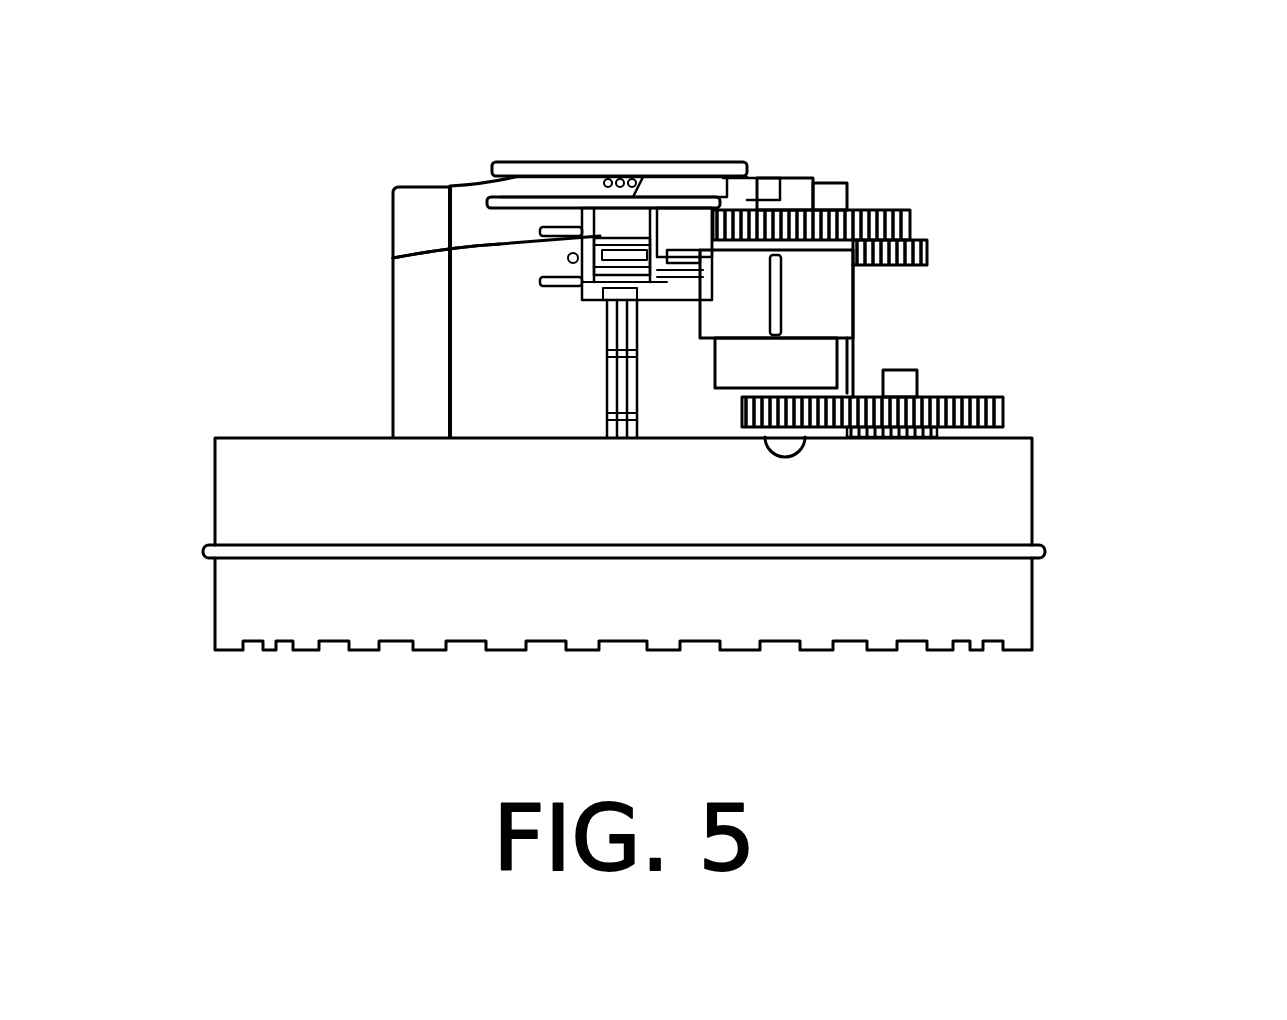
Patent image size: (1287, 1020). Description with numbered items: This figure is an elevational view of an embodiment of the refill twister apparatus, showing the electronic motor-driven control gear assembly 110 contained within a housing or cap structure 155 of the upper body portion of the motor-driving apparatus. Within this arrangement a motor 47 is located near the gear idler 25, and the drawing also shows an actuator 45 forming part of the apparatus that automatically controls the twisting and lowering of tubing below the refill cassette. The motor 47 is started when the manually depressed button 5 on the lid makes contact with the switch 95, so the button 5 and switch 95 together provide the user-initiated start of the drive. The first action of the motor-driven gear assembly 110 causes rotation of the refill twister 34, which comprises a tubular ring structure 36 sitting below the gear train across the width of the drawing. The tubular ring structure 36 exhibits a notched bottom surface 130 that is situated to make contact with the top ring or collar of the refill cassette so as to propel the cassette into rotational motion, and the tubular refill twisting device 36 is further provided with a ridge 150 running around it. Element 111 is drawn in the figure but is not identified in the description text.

The manually depressed button 5 is at (633, 197).
The gear idler 25 is at (870, 208).
The refill twister 34 is at (1017, 587).
The tubular ring structure 36 is at (1003, 518).
The actuator 45 is at (580, 207).
The motor 47 is at (750, 210).
The switch 95 is at (393, 258).
The gear assembly 110 is at (918, 203).
The lower gear 111 is at (790, 448).
The notched bottom surface 130 is at (997, 647).
The ridge 150 is at (857, 552).
The housing or cap structure 155 is at (387, 228).